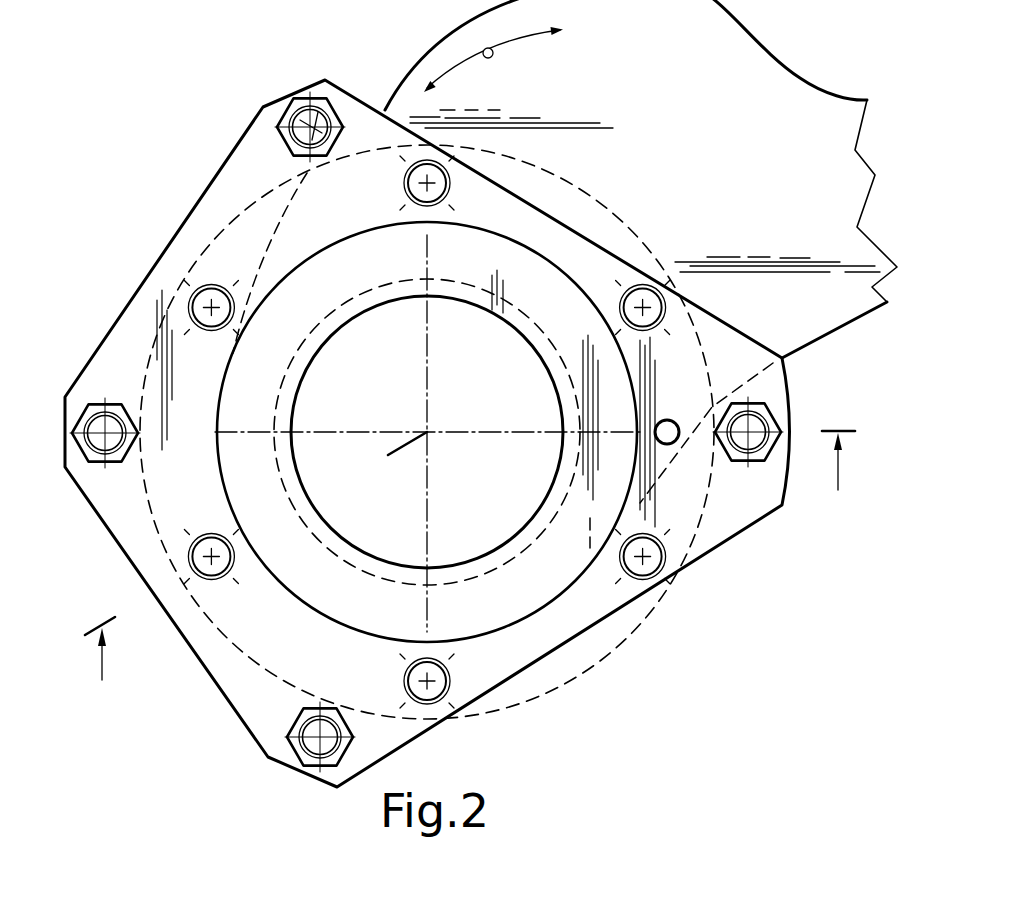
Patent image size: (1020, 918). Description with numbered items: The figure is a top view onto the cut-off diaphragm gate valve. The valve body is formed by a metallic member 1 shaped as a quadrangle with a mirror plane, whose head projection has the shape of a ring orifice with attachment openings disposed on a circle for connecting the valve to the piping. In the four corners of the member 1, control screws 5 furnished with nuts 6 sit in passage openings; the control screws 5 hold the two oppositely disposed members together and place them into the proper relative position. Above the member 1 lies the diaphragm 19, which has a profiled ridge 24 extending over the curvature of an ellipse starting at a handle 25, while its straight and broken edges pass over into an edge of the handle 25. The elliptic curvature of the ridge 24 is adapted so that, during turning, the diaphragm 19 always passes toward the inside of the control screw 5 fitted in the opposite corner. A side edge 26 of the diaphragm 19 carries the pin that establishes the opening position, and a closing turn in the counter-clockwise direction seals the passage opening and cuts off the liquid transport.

The member 1 is at (208, 222).
The control screw 5 is at (278, 142).
The nut 6 is at (288, 113).
The diaphragm 19 is at (760, 78).
The profiled ridge 24 is at (394, 78).
The handle 25 is at (822, 292).
The side edge 26 is at (800, 350).